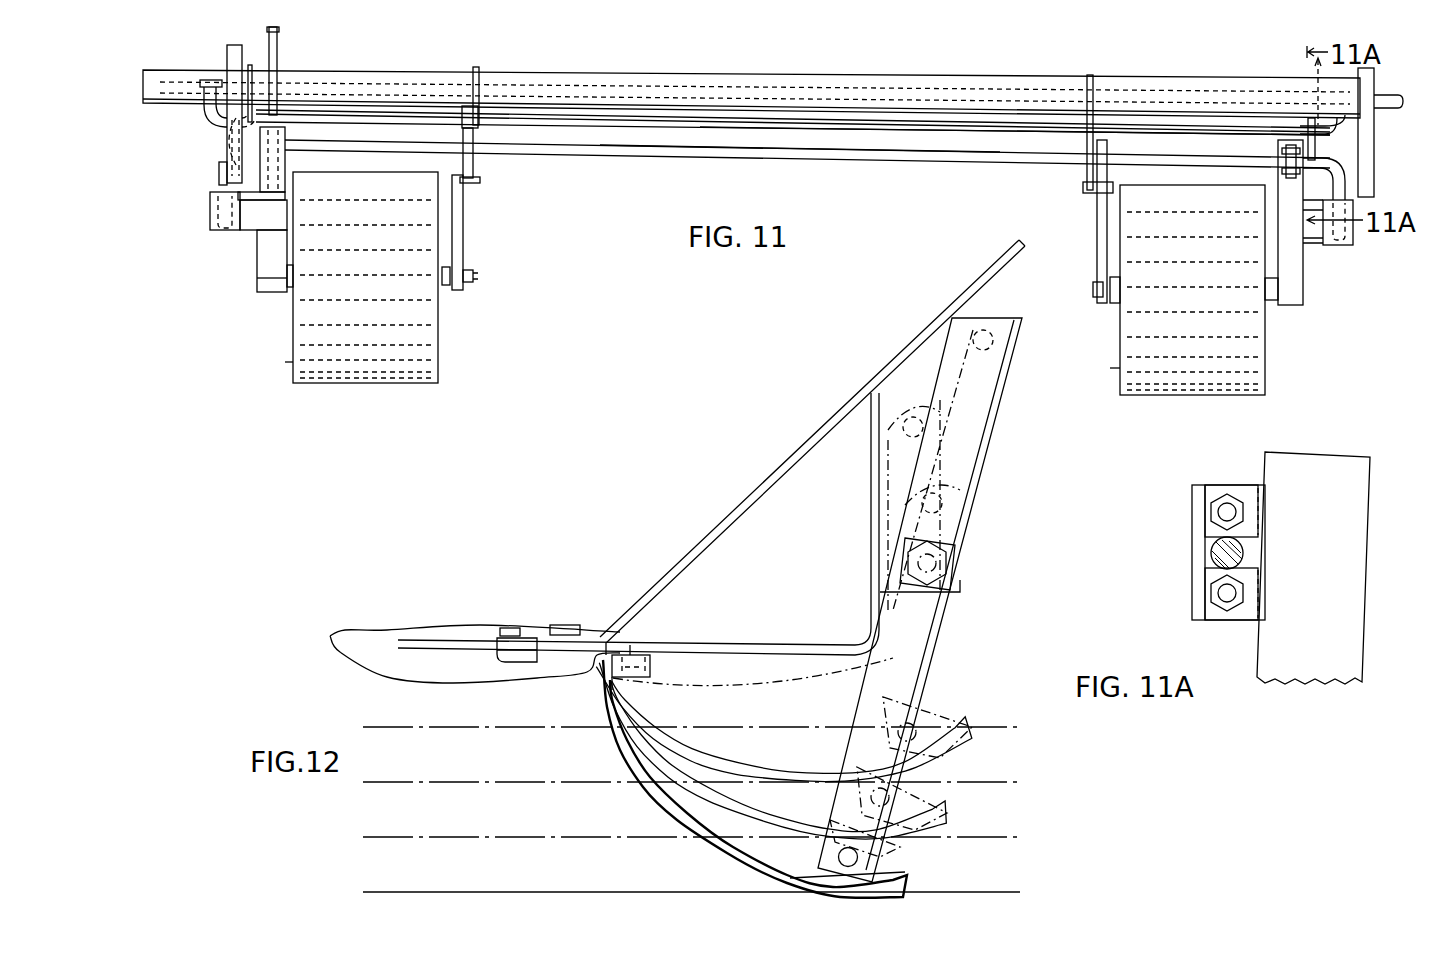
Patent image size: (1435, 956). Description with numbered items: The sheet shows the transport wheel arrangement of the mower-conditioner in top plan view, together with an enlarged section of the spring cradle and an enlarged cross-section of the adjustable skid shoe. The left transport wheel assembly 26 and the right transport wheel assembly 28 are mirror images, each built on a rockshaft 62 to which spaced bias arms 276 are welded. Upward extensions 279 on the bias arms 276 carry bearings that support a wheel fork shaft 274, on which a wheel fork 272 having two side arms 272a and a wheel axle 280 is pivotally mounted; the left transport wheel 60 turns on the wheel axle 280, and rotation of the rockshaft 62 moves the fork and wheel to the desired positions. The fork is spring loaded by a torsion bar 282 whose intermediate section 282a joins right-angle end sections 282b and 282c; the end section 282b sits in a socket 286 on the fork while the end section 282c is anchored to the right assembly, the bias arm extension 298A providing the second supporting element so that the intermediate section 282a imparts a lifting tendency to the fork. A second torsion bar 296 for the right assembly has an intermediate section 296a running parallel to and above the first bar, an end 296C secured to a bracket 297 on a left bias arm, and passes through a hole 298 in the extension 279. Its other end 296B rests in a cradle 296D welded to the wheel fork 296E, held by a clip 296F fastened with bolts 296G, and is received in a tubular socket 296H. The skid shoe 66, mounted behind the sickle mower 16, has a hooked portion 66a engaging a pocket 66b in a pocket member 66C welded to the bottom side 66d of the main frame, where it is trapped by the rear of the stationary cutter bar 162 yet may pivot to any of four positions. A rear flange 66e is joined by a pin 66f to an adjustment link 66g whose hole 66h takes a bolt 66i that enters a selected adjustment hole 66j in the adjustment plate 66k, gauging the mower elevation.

In FIG. 11, the rockshaft 62 is at (640, 76).
In FIG. 11, the bias arms 276 is at (255, 85).
In FIG. 11, the wheel fork shaft 274 is at (478, 128).
In FIG. 11, the torsion bar 282 is at (548, 128).
In FIG. 11, the intermediate section 282a is at (743, 127).
In FIG. 11, the end section 282b is at (222, 155).
In FIG. 11, the end section 282c is at (1340, 135).
In FIG. 11, the torsion bar 296 is at (633, 160).
In FIG. 11A, the torsion bar 296 is at (1240, 560).
In FIG. 11, the intermediate section 296a is at (688, 155).
In FIG. 11, the end 296B is at (1350, 162).
In FIG. 11, the end 296C is at (210, 118).
In FIG. 11A, the cradle 296D is at (1258, 542).
In FIG. 11, the wheel fork 296E is at (1303, 267).
In FIG. 11A, the wheel fork 296E is at (1323, 455).
In FIG. 11A, the clip 296F is at (1192, 605).
In FIG. 11A, the bolts 296G is at (1222, 595).
In FIG. 11, the tubular socket 296H is at (1348, 236).
In FIG. 11, the bracket 297 is at (212, 97).
In FIG. 11, the hole 298 is at (225, 183).
In FIG. 11, the bias arm extension 298A is at (1307, 137).
In FIG. 11, the socket 286 is at (219, 173).
In FIG. 11, the extensions 279 is at (267, 193).
In FIG. 11, the wheel fork 272 is at (250, 261).
In FIG. 11, the side arms 272a is at (257, 278).
In FIG. 11, the wheel axle 280 is at (457, 284).
In FIG. 11, the left transport wheel 60 is at (438, 325).
In FIG. 11, the left transport wheel assembly 26 is at (285, 362).
In FIG. 11, the right transport wheel assembly 28 is at (1118, 368).
In FIG. 12, the sickle mower 16 is at (446, 612).
In FIG. 12, the stationary cutter bar 162 is at (432, 673).
In FIG. 12, the skid shoe 66 is at (668, 803).
In FIG. 12, the hooked portion 66a is at (625, 678).
In FIG. 12, the pocket 66b is at (640, 655).
In FIG. 12, the pocket member 66C is at (651, 670).
In FIG. 12, the bottom side 66d is at (735, 658).
In FIG. 12, the flange 66e is at (900, 875).
In FIG. 12, the pin 66f is at (860, 858).
In FIG. 12, the adjustment link 66g is at (898, 832).
In FIG. 12, the hole 66h is at (950, 557).
In FIG. 12, the bolt 66i is at (950, 578).
In FIG. 12, the adjustment hole 66j is at (945, 497).
In FIG. 12, the adjustment plate 66k is at (995, 458).